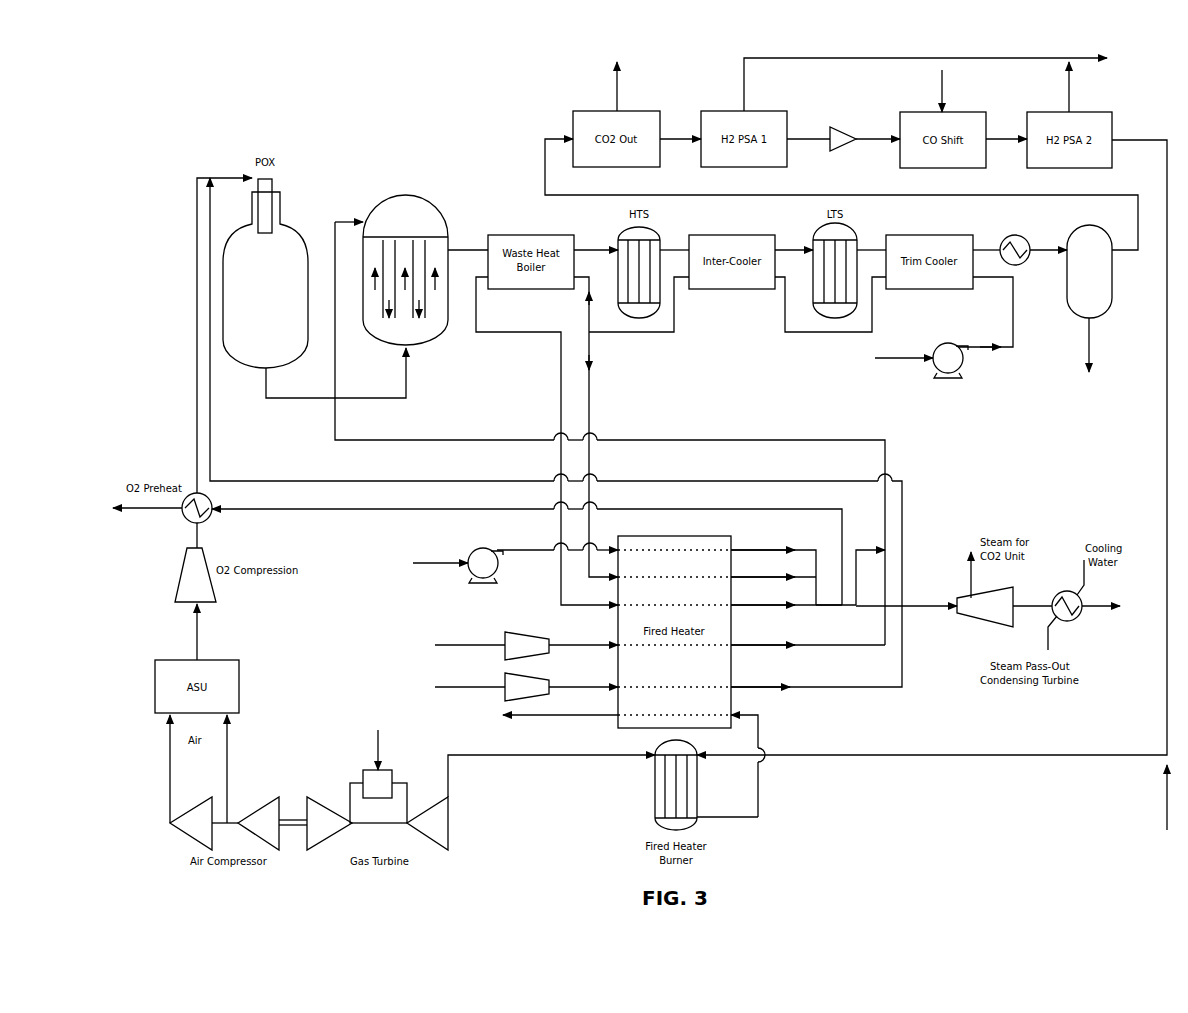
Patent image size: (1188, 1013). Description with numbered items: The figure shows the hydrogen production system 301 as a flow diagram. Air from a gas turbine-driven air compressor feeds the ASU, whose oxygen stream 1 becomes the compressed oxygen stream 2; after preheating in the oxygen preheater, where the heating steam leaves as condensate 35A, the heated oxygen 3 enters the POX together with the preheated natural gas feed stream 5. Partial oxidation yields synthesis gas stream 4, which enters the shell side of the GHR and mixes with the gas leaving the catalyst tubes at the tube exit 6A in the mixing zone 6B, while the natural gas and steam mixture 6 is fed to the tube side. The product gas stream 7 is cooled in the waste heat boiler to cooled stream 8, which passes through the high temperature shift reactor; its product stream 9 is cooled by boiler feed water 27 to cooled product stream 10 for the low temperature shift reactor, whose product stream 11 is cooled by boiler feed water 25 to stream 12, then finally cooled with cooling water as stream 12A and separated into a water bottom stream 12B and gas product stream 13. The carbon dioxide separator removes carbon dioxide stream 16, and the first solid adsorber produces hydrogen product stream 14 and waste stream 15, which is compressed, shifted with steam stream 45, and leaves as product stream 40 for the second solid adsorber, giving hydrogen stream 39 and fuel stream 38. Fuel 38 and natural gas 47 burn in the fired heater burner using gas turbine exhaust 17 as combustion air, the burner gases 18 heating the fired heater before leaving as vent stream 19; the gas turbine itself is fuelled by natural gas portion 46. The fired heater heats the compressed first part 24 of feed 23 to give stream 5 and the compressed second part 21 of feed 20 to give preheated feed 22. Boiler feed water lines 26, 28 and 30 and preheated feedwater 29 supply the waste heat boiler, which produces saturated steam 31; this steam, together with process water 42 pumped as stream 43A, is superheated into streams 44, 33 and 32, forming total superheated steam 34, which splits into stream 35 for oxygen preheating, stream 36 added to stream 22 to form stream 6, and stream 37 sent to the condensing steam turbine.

The oxygen stream from ASU 1 is at (190, 632).
The compressed oxygen stream 2 is at (203, 535).
The preheated oxygen stream to POX 3 is at (215, 335).
The synthesis gas stream 4 is at (336, 373).
The natural gas feed stream 5 is at (556, 432).
The natural gas and steam feed stream 6 is at (601, 433).
The tube exit of GHR 6A is at (423, 328).
The mixing zone of GHR 6B is at (413, 335).
The product gas stream 7 is at (468, 241).
The cooled product stream 8 is at (596, 240).
The product stream from high temperature shift reactor 9 is at (674, 240).
The cooled product stream 10 is at (794, 240).
The product stream from low temperature shift reactor 11 is at (871, 240).
The trim cooler outlet stream 12 is at (986, 240).
The cooled stream after heat exchanger 12A is at (1033, 248).
The bottom stream 12B is at (1103, 345).
The gas product stream 13 is at (841, 194).
The hydrogen product stream 14 is at (937, 74).
The waste stream 15 is at (843, 130).
The carbon dioxide stream 16 is at (626, 86).
The gas turbine exhaust 17 is at (551, 766).
The burner flue gas to fired heater 18 is at (736, 766).
The fired heater vent 19 is at (544, 709).
The second part of the feed stream 20 is at (451, 640).
The compressed second part 21 is at (561, 642).
The preheated feed stream 22 is at (808, 635).
The first part of the feed stream 23 is at (451, 682).
The compressed first part 24 is at (561, 684).
The boiler feed water stream 25 is at (884, 358).
The pumped boiler feed water to trim cooler 26 is at (985, 312).
The boiler feed water stream 27 is at (825, 304).
The boiler feed water from inter-cooler 28 is at (642, 304).
The preheated boiler feedwater stream 29 is at (578, 304).
The boiler feed water to fired heater 30 is at (603, 454).
The steam stream 31 is at (547, 441).
The superheated steam stream 32 is at (786, 595).
The superheated steam stream 33 is at (773, 567).
The total superheated steam stream 34 is at (836, 596).
The steam stream 35 is at (527, 547).
The condensate out 35A is at (118, 508).
The steam stream 36 is at (870, 568).
The steam stream 37 is at (906, 596).
The fuel stream 38 is at (932, 438).
The hydrogen stream 39 is at (1078, 87).
The product stream from the CO shift system 40 is at (1006, 130).
The process water 42 is at (418, 558).
The pumped process water to fired heater 43A is at (543, 557).
The superheated steam stream 44 is at (773, 568).
The steam stream 45 is at (952, 91).
The natural gas portion 46 is at (379, 742).
The natural gas stream 47 is at (1152, 797).
The system 301 is at (882, 810).